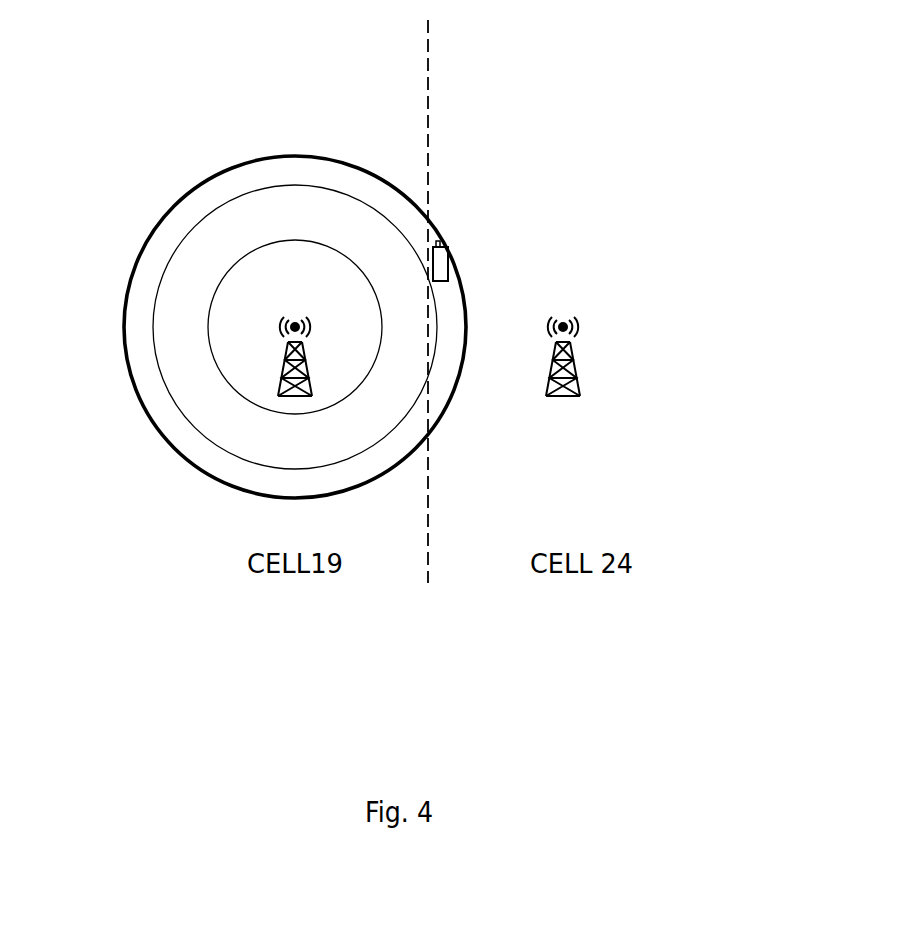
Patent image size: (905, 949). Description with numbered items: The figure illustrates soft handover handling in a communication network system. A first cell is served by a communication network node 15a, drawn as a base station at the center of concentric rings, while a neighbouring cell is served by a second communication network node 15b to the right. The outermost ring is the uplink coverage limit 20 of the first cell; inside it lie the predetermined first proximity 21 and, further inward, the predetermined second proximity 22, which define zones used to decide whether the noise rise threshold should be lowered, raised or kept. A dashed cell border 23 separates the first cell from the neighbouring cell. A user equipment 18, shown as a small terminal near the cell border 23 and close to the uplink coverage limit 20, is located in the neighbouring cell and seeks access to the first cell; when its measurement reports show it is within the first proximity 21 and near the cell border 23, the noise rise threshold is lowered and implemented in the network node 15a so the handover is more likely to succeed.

The communication network node 15a is at (288, 344).
The communication network node 15b is at (555, 352).
The user equipment 18 is at (450, 253).
The uplink coverage limit 20 is at (139, 251).
The predetermined first proximity 21 is at (190, 423).
The predetermined second proximity 22 is at (213, 357).
The cell border 23 is at (428, 98).